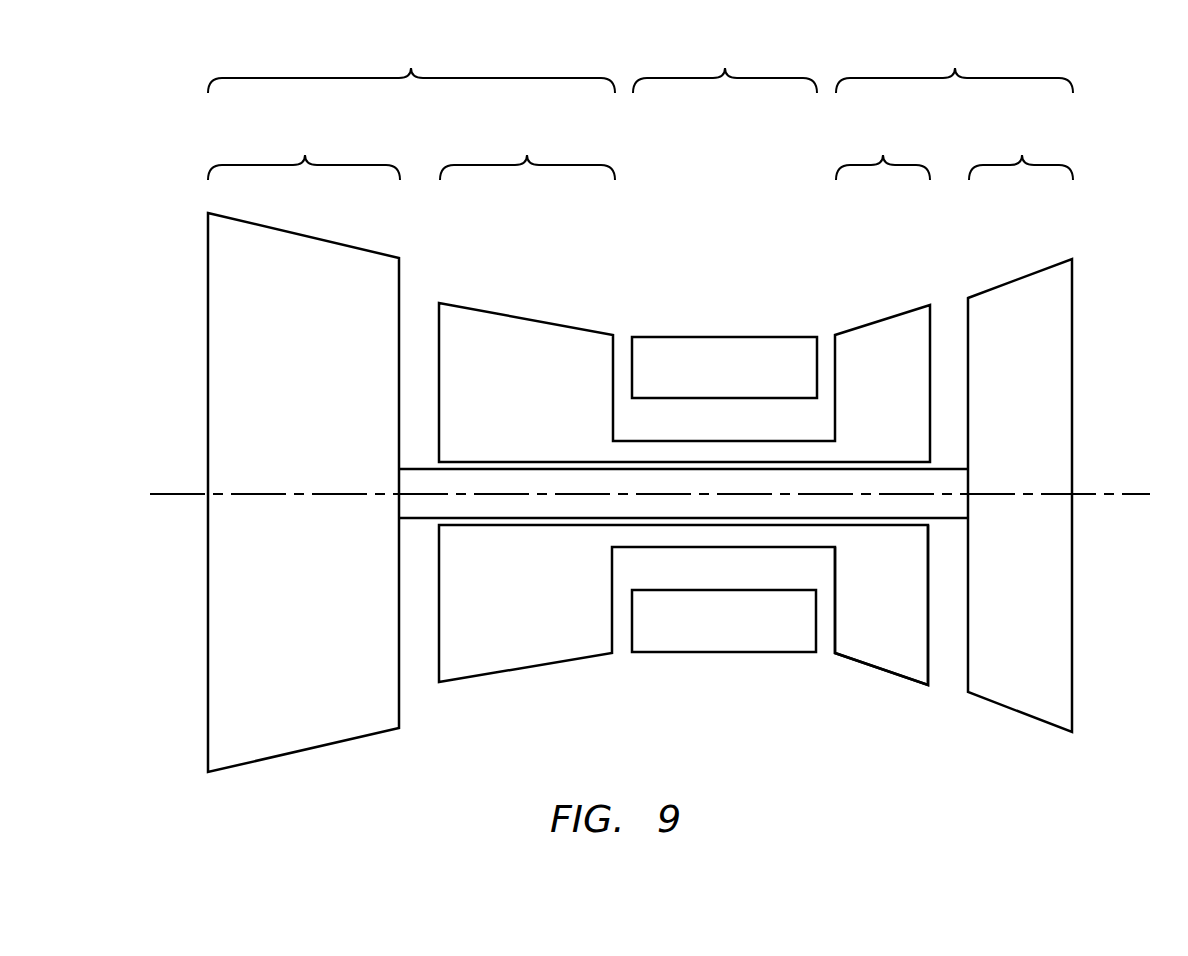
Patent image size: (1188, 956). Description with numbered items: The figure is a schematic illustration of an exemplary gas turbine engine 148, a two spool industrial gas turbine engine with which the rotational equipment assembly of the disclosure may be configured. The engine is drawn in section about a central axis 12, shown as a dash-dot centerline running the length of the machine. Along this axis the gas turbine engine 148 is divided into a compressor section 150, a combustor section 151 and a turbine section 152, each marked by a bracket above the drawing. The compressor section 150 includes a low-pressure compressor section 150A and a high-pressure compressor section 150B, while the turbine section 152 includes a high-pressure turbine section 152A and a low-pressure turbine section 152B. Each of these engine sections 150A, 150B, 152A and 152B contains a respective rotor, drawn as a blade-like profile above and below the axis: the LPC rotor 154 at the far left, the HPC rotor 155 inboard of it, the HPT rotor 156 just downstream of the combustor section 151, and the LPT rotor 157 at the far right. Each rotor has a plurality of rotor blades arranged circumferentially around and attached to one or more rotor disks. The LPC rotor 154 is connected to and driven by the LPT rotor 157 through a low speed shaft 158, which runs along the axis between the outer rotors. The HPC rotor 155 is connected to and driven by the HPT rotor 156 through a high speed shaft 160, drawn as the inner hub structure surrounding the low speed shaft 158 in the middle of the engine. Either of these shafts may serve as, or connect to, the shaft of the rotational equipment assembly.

The engine centerline axis 12 is at (1137, 497).
The gas turbine engine 148 is at (146, 142).
The compressor section 150 is at (411, 65).
The low-pressure compressor (LPC) section 150A is at (304, 153).
The high-pressure compressor (HPC) section 150B is at (527, 153).
The combustor section 151 is at (725, 65).
The turbine section 152 is at (954, 65).
The high-pressure turbine (HPT) section 152A is at (883, 153).
The low-pressure turbine (LPT) section 152B is at (1021, 153).
The LPC rotor 154 is at (220, 377).
The HPC rotor 155 is at (438, 632).
The HPT rotor 156 is at (928, 636).
The LPT rotor 157 is at (1062, 395).
The low speed shaft 158 is at (945, 520).
The high speed shaft 160 is at (645, 547).